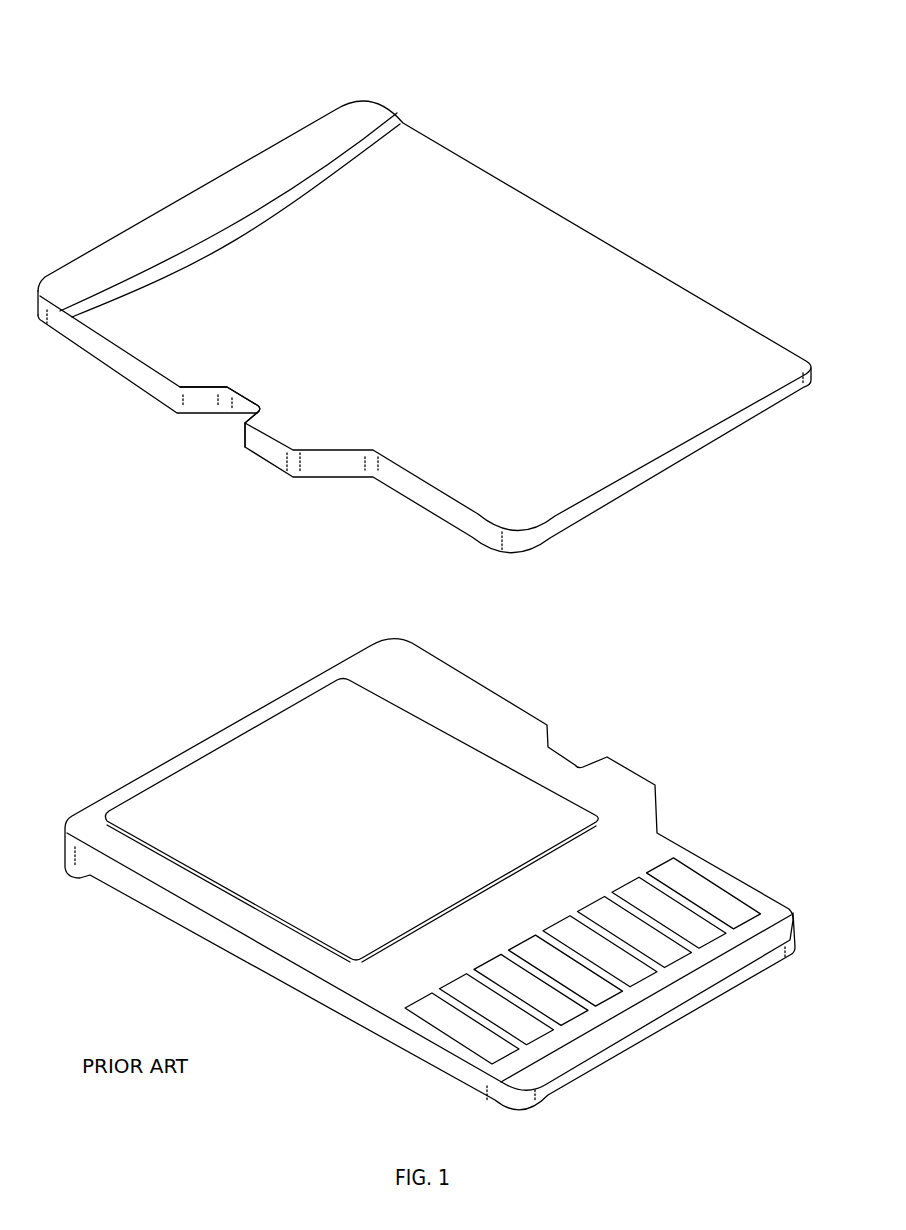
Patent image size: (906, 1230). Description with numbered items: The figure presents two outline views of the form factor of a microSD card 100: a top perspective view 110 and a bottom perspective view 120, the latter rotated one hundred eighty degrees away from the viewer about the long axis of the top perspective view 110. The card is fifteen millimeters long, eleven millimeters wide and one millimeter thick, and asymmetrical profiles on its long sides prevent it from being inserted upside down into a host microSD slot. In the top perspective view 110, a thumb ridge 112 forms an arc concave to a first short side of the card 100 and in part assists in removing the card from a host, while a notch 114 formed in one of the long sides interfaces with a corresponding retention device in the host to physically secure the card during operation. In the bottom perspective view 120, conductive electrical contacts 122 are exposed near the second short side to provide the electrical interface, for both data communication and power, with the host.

The microSD card 100 is at (112, 40).
The top perspective view 110 is at (424, 329).
The thumb ridge 112 is at (213, 221).
The notch 114 is at (238, 412).
The bottom perspective view 120 is at (436, 874).
The contact pads 122 is at (640, 897).